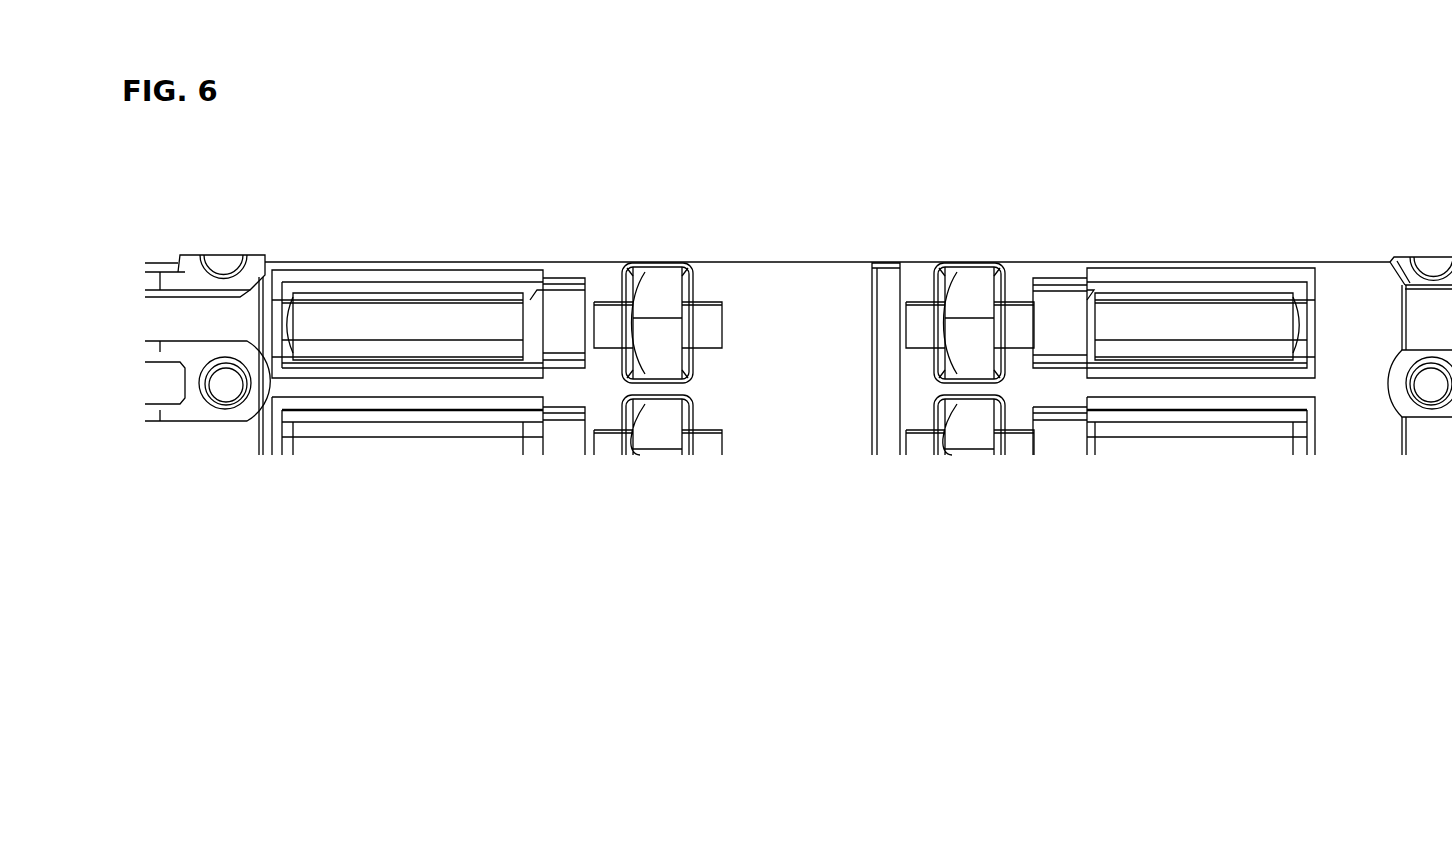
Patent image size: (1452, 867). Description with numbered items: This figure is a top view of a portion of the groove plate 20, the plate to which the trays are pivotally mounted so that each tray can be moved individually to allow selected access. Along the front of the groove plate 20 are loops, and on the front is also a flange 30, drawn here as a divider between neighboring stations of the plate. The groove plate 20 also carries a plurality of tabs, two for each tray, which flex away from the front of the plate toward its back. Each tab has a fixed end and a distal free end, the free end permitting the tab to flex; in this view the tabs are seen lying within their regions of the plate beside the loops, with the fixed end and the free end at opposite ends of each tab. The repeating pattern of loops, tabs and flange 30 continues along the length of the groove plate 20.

The groove plate 20 is at (820, 122).
The flange 30 is at (888, 285).